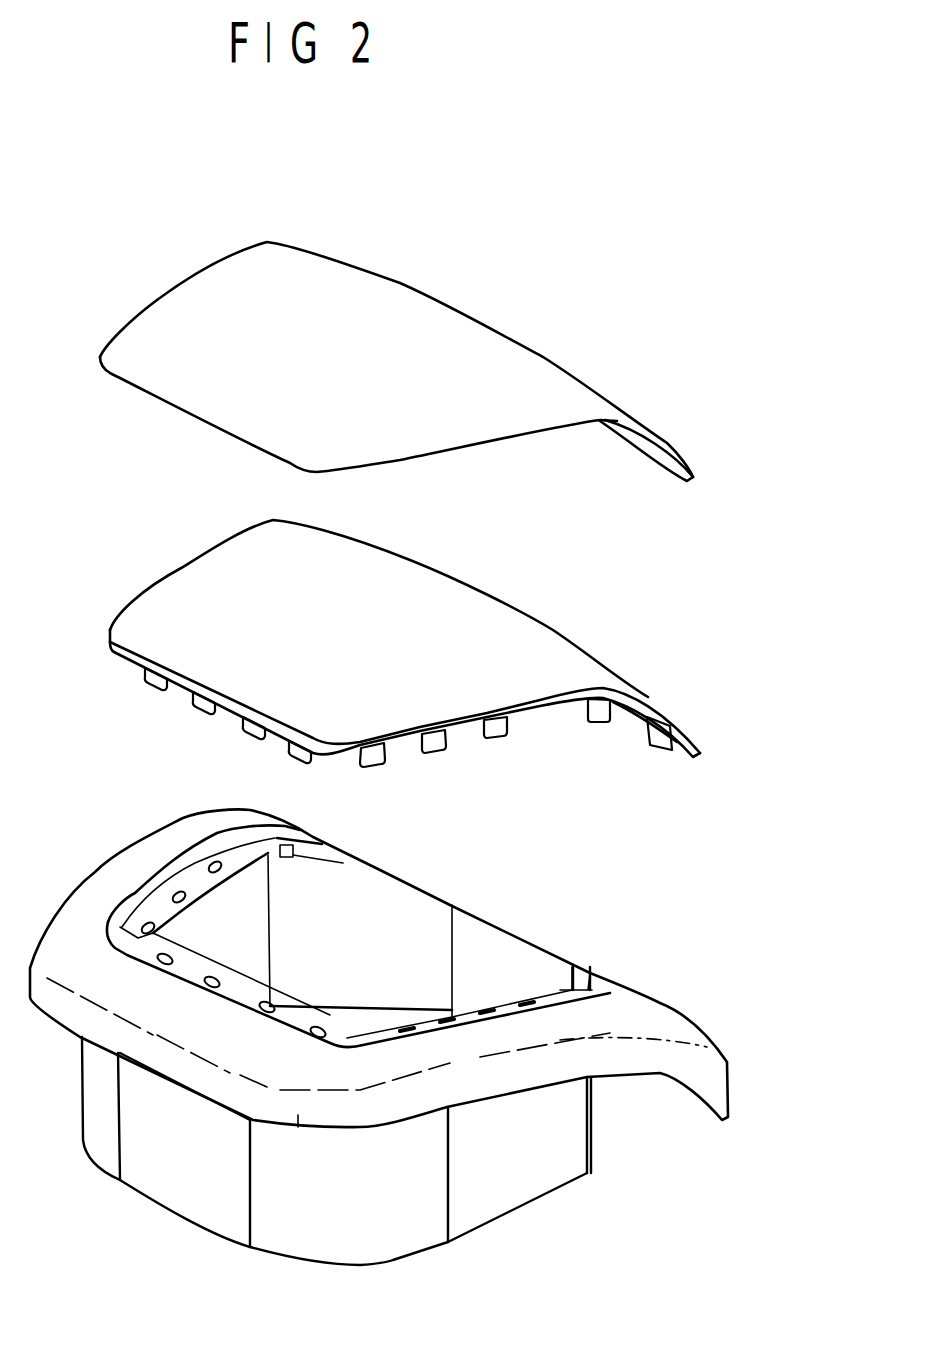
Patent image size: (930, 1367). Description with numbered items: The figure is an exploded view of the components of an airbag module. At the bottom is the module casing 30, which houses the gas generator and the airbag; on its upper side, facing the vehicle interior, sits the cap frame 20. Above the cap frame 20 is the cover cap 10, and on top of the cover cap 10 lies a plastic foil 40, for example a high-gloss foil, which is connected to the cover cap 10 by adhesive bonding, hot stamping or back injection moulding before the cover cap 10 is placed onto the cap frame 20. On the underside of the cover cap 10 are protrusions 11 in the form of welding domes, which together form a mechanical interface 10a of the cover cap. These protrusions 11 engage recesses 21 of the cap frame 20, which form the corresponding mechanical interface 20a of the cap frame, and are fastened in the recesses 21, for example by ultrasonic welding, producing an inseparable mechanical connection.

The plastic foil 40 is at (520, 373).
The cover cap 10 is at (530, 645).
The protrusions 11 is at (498, 730).
The mechanical interface of the cover cap 10a is at (440, 760).
The cap frame 20 is at (643, 1015).
The mechanical interface of the cap frame 20a is at (145, 911).
The recesses 21 is at (272, 1004).
The module casing 30 is at (505, 1192).